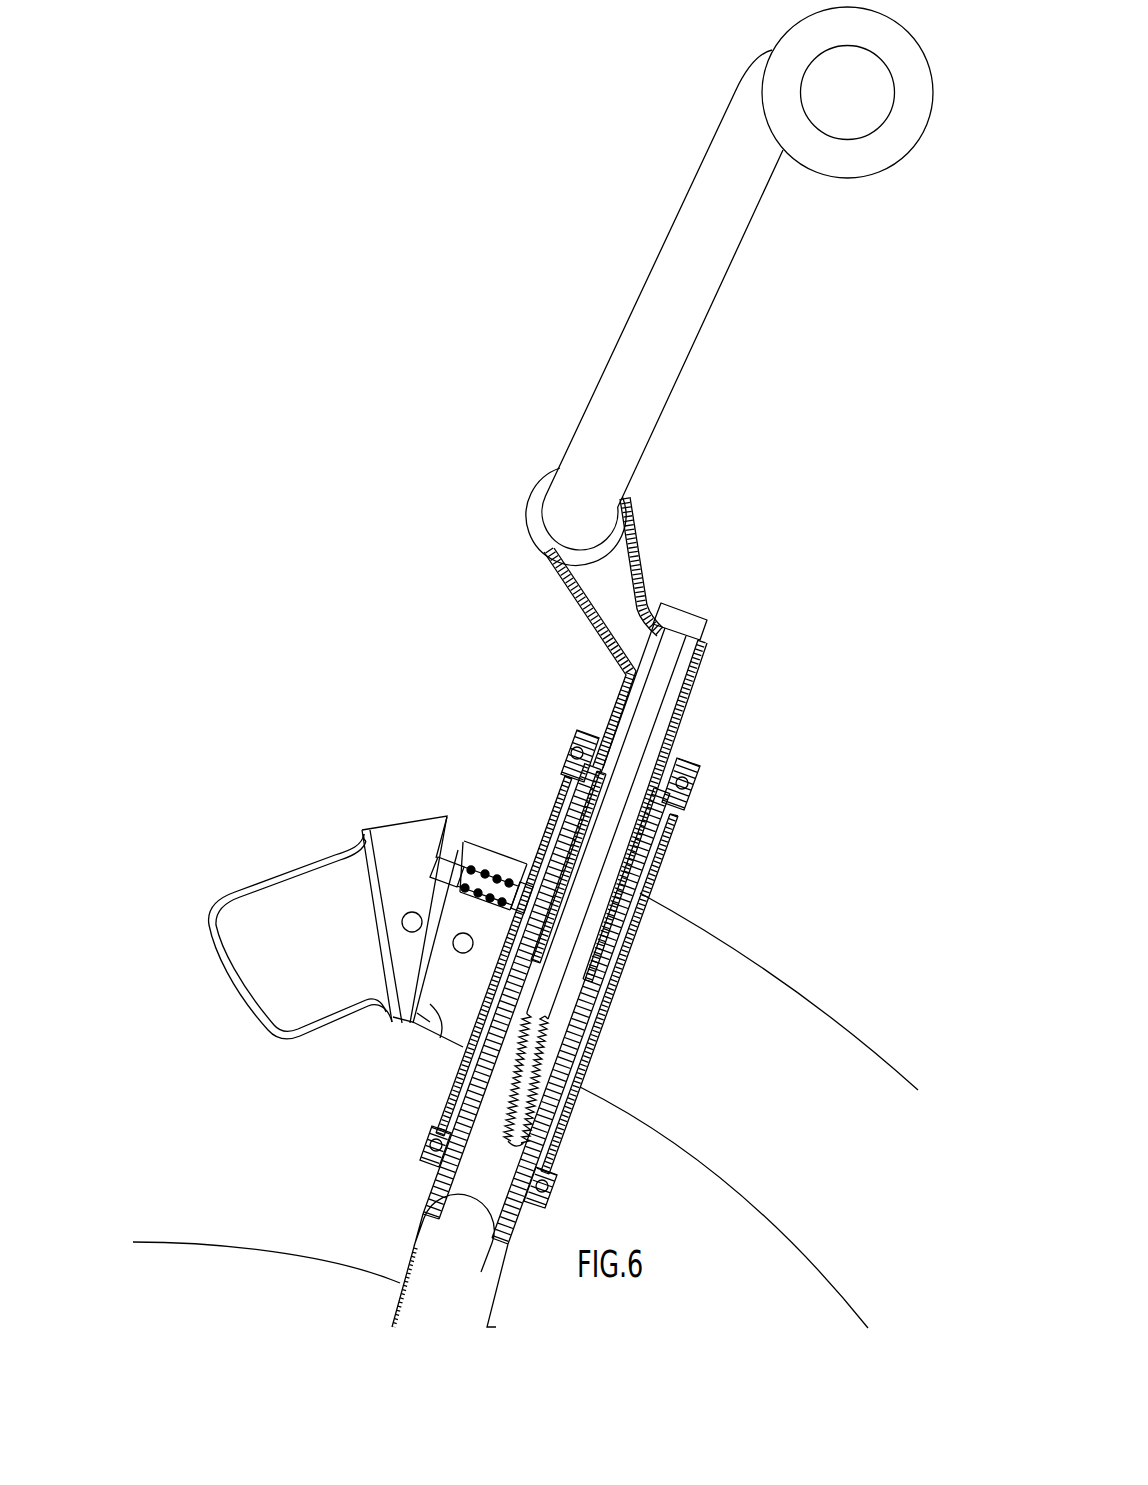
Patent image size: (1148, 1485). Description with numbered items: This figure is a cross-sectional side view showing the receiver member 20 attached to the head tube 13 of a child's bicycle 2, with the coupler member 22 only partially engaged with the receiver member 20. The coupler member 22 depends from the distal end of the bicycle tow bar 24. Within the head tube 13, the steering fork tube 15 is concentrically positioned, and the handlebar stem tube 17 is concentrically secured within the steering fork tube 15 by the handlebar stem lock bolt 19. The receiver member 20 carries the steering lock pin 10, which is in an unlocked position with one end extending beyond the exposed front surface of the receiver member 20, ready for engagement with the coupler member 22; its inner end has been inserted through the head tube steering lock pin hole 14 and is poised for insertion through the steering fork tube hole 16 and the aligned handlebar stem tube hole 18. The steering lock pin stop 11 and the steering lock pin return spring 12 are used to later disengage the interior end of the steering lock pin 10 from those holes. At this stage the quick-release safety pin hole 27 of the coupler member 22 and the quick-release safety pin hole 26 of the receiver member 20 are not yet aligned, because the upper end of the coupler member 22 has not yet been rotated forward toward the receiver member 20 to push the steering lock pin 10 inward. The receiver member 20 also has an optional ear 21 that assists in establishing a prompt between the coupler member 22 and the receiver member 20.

The child's bicycle 2 is at (843, 1021).
The steering lock pin 10 is at (410, 828).
The steering lock pin stop 11 is at (462, 842).
The steering lock pin return spring 12 is at (493, 878).
The head tube 13 is at (443, 1110).
The head tube steering lock pin hole 14 is at (518, 862).
The steering fork tube 15 is at (425, 1197).
The steering fork tube hole 16 is at (545, 897).
The handlebar stem tube 17 is at (693, 700).
The handlebar stem tube hole 18 is at (567, 868).
The handlebar stem lock bolt 19 is at (683, 618).
The receiver member 20 is at (472, 987).
The ear 21 is at (420, 1018).
The coupler member 22 is at (372, 868).
The bicycle tow bar 24 is at (307, 858).
The quick-release safety pin hole 26 is at (405, 913).
The quick-release safety pin hole 27 is at (455, 938).